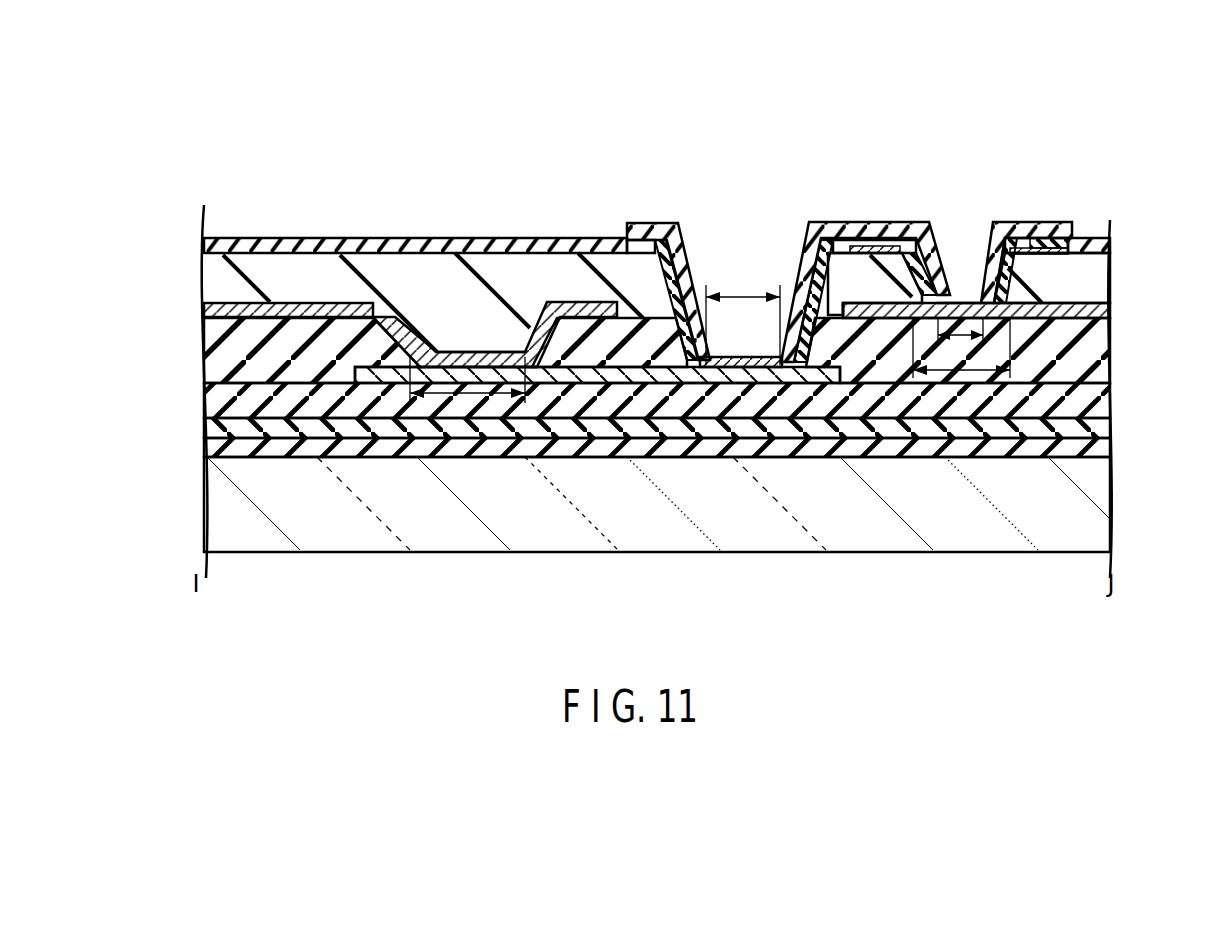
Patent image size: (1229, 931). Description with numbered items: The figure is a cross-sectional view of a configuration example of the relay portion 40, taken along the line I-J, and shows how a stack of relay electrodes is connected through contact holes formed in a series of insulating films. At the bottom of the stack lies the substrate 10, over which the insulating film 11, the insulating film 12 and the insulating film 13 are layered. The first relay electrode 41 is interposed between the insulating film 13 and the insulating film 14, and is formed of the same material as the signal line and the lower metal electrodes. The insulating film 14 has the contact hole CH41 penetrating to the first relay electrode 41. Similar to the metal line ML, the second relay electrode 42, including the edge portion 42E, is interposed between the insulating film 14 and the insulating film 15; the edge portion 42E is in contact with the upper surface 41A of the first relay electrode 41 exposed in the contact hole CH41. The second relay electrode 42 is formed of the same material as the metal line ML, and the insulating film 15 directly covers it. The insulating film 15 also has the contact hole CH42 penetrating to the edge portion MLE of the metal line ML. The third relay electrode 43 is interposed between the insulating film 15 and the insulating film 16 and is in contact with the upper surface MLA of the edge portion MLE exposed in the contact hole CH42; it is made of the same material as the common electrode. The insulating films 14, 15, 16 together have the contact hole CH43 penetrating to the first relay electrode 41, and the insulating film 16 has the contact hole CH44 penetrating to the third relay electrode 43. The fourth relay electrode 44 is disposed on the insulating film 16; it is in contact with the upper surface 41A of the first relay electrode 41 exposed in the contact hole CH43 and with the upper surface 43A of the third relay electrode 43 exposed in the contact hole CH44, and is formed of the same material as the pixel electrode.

The relay portion 40 is at (567, 124).
The substrate 10 is at (215, 515).
The first insulating film 11 is at (208, 446).
The second insulating film 12 is at (208, 437).
The insulating film 13 is at (208, 400).
The insulating film 14 is at (210, 351).
The insulating film 15 is at (220, 283).
The insulating film 16 is at (205, 247).
The first relay electrode 41 is at (356, 367).
The upper surface of the first relay electrode 41A is at (454, 348).
The second relay electrode 42 is at (274, 300).
The edge portion 42E is at (491, 352).
The third relay electrode 43 is at (1046, 252).
The upper surface of the third relay electrode 43A is at (967, 274).
The fourth relay electrode 44 is at (1046, 244).
The metal line ML is at (1100, 310).
The upper surface of the edge portion MLA is at (950, 285).
The edge portion of the metal line MLE is at (883, 308).
The contact hole CH41 is at (457, 400).
The contact hole CH42 is at (962, 380).
The contact hole CH43 is at (742, 296).
The contact hole CH44 is at (958, 334).